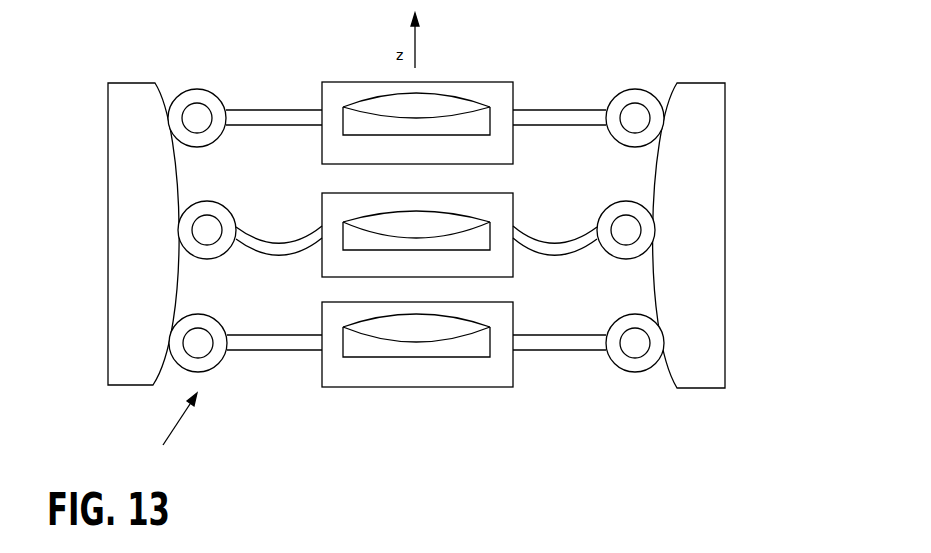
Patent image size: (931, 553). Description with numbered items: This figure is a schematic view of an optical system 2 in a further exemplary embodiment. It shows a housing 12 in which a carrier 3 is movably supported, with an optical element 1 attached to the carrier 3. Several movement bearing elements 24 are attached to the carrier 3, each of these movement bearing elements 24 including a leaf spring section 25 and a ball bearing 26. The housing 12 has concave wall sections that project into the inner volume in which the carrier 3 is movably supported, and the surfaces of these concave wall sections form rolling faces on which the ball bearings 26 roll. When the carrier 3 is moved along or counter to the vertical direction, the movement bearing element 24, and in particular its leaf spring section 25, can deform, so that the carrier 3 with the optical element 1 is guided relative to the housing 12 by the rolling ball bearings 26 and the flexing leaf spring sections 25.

The optical element 1 is at (436, 105).
The optical system 2 is at (172, 429).
The carrier 3 is at (495, 90).
The housing 12 is at (132, 229).
The movement bearing element 24 is at (253, 349).
The leaf spring section 25 is at (252, 110).
The ball bearing 26 is at (192, 92).